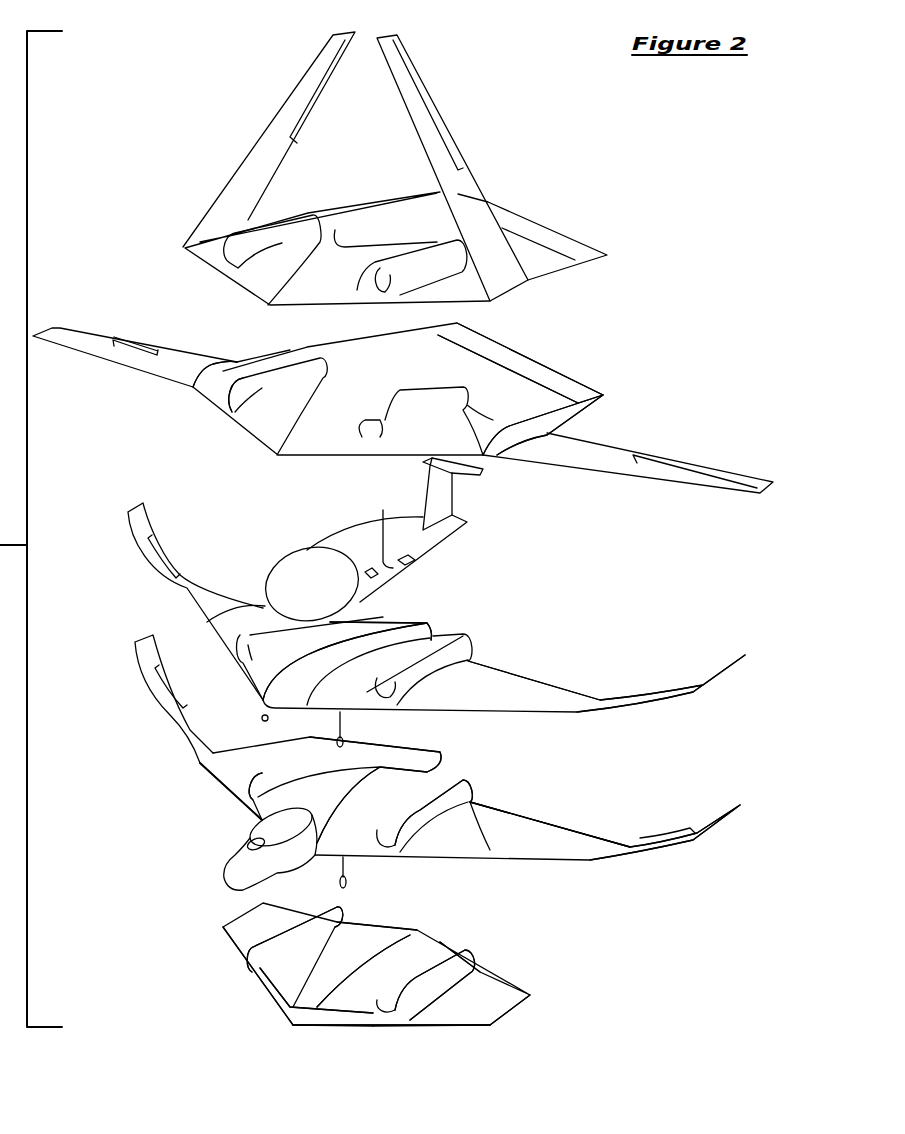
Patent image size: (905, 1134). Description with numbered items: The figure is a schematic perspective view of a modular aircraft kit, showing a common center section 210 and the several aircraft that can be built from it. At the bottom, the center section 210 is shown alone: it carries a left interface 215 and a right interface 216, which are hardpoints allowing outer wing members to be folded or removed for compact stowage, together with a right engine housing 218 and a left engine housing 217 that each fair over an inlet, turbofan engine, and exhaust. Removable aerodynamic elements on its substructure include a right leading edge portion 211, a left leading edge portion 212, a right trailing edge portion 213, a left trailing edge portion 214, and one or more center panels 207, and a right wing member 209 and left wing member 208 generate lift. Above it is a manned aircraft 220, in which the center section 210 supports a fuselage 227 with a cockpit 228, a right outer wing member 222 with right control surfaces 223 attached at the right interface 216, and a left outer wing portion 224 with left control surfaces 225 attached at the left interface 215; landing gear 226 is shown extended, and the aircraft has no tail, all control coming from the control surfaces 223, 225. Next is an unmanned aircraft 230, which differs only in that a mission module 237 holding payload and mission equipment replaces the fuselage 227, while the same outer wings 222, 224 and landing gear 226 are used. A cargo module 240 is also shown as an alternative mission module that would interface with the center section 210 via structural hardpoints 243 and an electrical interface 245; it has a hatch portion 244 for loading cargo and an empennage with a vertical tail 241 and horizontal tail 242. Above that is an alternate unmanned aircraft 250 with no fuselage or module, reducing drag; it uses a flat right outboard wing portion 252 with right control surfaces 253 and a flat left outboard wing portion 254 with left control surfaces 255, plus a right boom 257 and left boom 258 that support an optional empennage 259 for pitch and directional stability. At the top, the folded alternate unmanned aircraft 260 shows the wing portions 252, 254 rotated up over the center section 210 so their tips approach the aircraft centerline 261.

The center panel 207 is at (285, 980).
The left wing member 208 is at (437, 1028).
The right wing member 209 is at (235, 948).
The center section 210 is at (232, 282).
The right leading edge portion 211 is at (272, 998).
The left leading edge portion 212 is at (330, 1028).
The right trailing edge portion 213 is at (370, 920).
The right upper edge of central body 214 is at (435, 940).
The left interface 215 is at (490, 850).
The right interface 216 is at (210, 405).
The left engine housing 217 is at (472, 790).
The right engine housing 218 is at (238, 800).
The manned aircraft 220 is at (195, 847).
The right outer wing member 222 is at (158, 578).
The right control surfaces 223 is at (150, 672).
The left outer wing portion 224 is at (510, 712).
The left control surfaces 225 is at (700, 830).
The landing gear 226 is at (332, 722).
The fuselage 227 is at (410, 752).
The cockpit 228 is at (283, 845).
The unmanned aircraft 230 is at (573, 638).
The mission module 237 is at (400, 617).
The cargo module 240 is at (300, 517).
The vertical tail 241 is at (455, 508).
The horizontal tail 242 is at (466, 482).
The structural hardpoints 243 is at (378, 580).
The hatch portion 244 is at (292, 556).
The electrical interface 245 is at (386, 535).
The alternate unmanned aircraft 250 is at (200, 425).
The right outboard wing portion 252 is at (252, 150).
The right control surfaces 253 is at (140, 343).
The left outboard wing portion 254 is at (485, 178).
The left control surfaces 255 is at (720, 467).
The right boom 257 is at (265, 352).
The left boom 258 is at (572, 432).
The empennage 259 is at (528, 355).
The folded alternate unmanned aircraft 260 is at (140, 168).
The aircraft centerline 261 is at (345, 225).